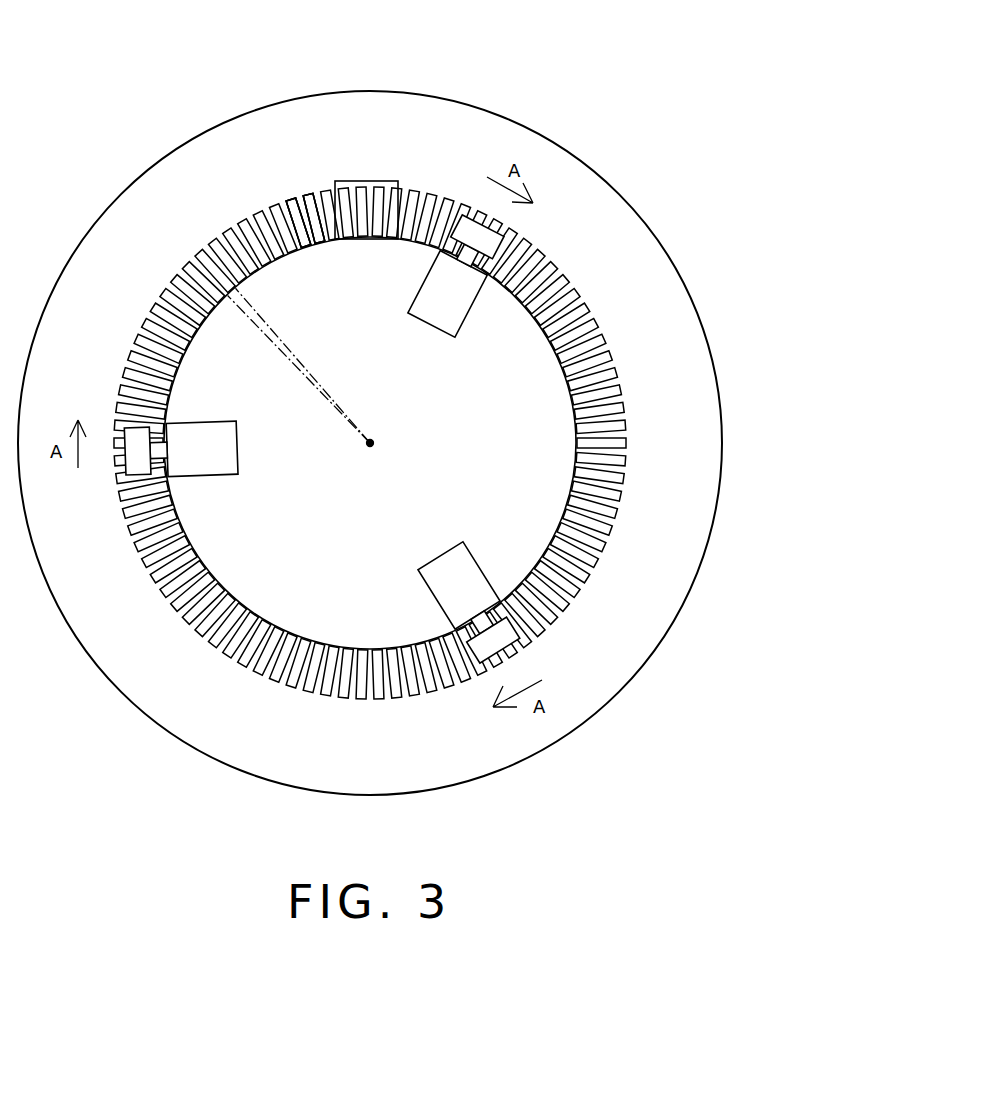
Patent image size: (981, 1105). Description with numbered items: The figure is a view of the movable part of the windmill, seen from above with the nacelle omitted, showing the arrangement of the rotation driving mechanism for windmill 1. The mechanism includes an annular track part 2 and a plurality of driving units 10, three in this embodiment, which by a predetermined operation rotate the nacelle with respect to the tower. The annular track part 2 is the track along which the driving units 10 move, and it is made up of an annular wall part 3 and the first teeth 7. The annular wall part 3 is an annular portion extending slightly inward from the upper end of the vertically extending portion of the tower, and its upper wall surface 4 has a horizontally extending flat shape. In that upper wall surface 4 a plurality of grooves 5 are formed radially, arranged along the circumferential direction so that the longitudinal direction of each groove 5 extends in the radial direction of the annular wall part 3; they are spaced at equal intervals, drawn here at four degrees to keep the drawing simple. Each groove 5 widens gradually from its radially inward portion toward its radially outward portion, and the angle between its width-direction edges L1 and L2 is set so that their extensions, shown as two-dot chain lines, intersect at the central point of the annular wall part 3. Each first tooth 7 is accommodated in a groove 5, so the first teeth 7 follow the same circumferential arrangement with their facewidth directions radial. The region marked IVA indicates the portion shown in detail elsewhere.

The rotation driving mechanism for windmill 1 is at (647, 85).
The annular track part 2 is at (560, 88).
The annular wall part 3 is at (473, 102).
The upper wall surface 4 is at (552, 267).
The groove 5 is at (290, 197).
The first tooth 7 is at (302, 238).
The driving unit 10 is at (412, 346).
The edge of groove L1 is at (213, 242).
The edge of groove L2 is at (187, 262).
The section view IVA is at (367, 181).